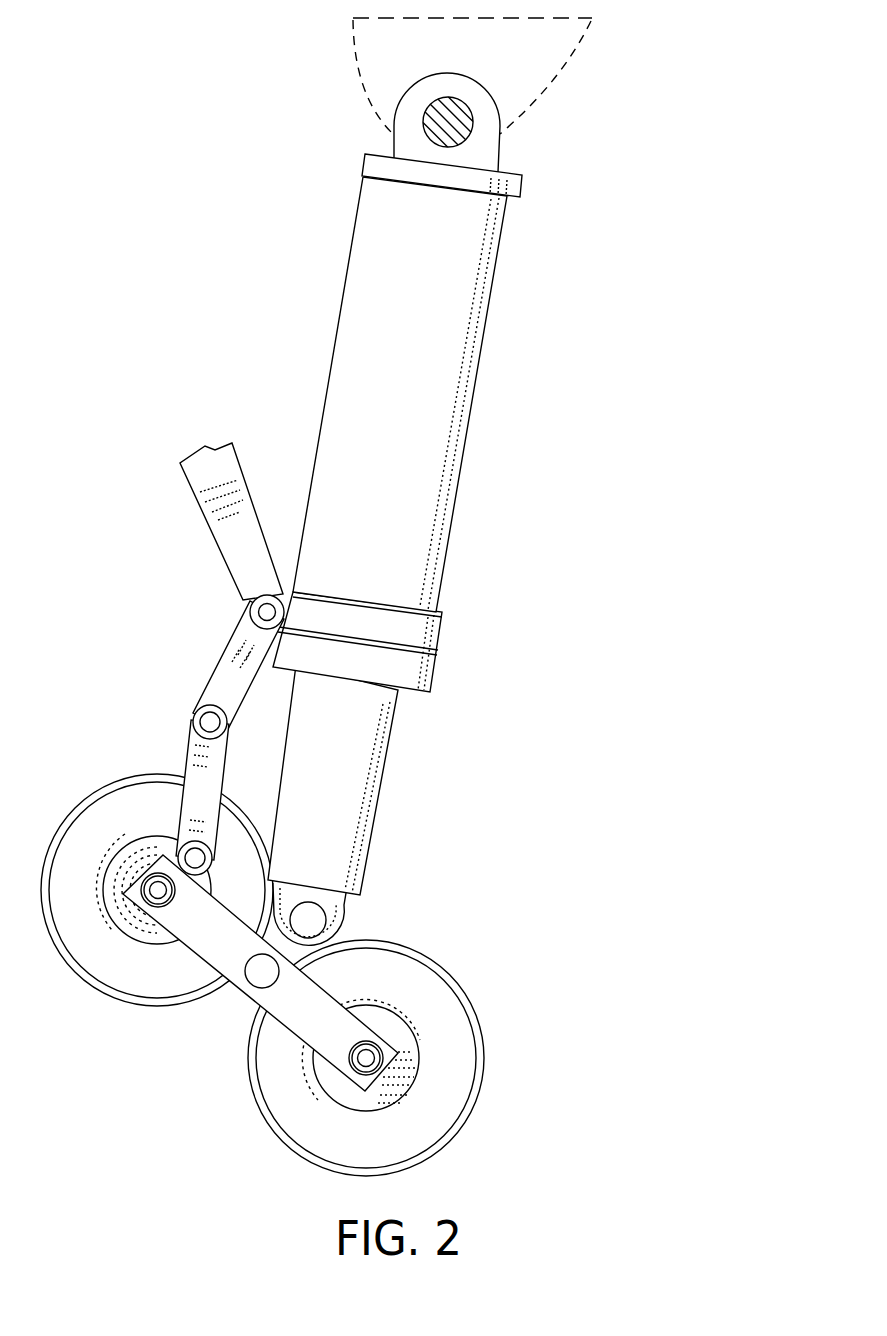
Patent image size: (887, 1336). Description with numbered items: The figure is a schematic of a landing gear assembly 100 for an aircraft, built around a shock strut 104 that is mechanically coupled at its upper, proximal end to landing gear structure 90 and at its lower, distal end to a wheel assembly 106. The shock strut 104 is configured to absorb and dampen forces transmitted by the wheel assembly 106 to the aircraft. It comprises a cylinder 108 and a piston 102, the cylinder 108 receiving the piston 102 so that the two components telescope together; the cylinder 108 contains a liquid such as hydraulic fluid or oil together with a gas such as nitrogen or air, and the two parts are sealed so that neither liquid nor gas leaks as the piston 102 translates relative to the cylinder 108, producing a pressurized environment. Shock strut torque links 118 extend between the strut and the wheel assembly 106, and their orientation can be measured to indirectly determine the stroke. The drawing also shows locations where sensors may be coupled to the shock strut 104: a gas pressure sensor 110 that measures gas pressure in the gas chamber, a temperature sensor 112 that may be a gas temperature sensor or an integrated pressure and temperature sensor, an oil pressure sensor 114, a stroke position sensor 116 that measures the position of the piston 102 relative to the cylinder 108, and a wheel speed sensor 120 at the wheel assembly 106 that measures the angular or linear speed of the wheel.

The landing gear structure 90 is at (380, 40).
The landing gear assembly 100 is at (393, 624).
The piston 102 is at (362, 830).
The shock strut 104 is at (420, 394).
The wheel assembly 106 is at (465, 1002).
The cylinder 108 is at (430, 498).
The gas pressure sensor 110 is at (362, 214).
The temperature sensor 112 is at (360, 285).
The oil pressure sensor 114 is at (350, 357).
The stroke position sensor 116 is at (395, 698).
The torque links 118 is at (198, 713).
The wheel speed sensor 120 is at (382, 1018).